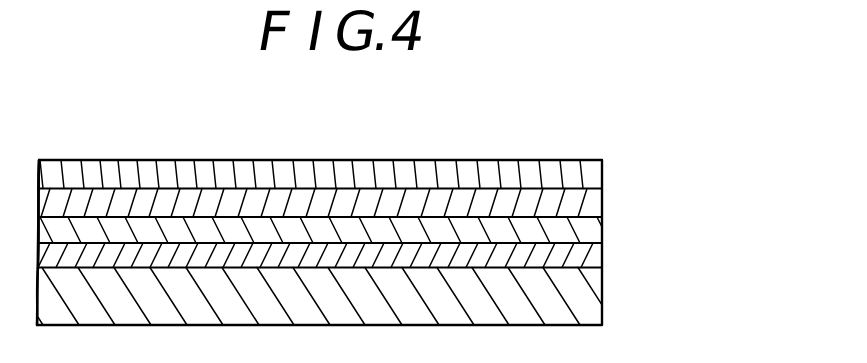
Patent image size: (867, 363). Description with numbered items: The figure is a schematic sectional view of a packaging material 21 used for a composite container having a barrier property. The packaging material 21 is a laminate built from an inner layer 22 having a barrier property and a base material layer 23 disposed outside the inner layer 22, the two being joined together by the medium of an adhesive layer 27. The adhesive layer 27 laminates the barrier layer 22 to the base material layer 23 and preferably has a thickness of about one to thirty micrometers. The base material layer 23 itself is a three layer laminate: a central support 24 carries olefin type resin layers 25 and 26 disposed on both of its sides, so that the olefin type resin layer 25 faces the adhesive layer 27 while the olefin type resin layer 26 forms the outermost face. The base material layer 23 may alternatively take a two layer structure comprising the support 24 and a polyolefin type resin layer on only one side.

The packaging material 21 is at (498, 148).
The inner layer having a barrier property 22 is at (590, 300).
The base material layer 23 is at (679, 150).
The support 24 is at (600, 207).
The olefin type resin layer 25 is at (595, 237).
The olefin type resin layer 26 is at (600, 173).
The adhesive layer 27 is at (592, 258).